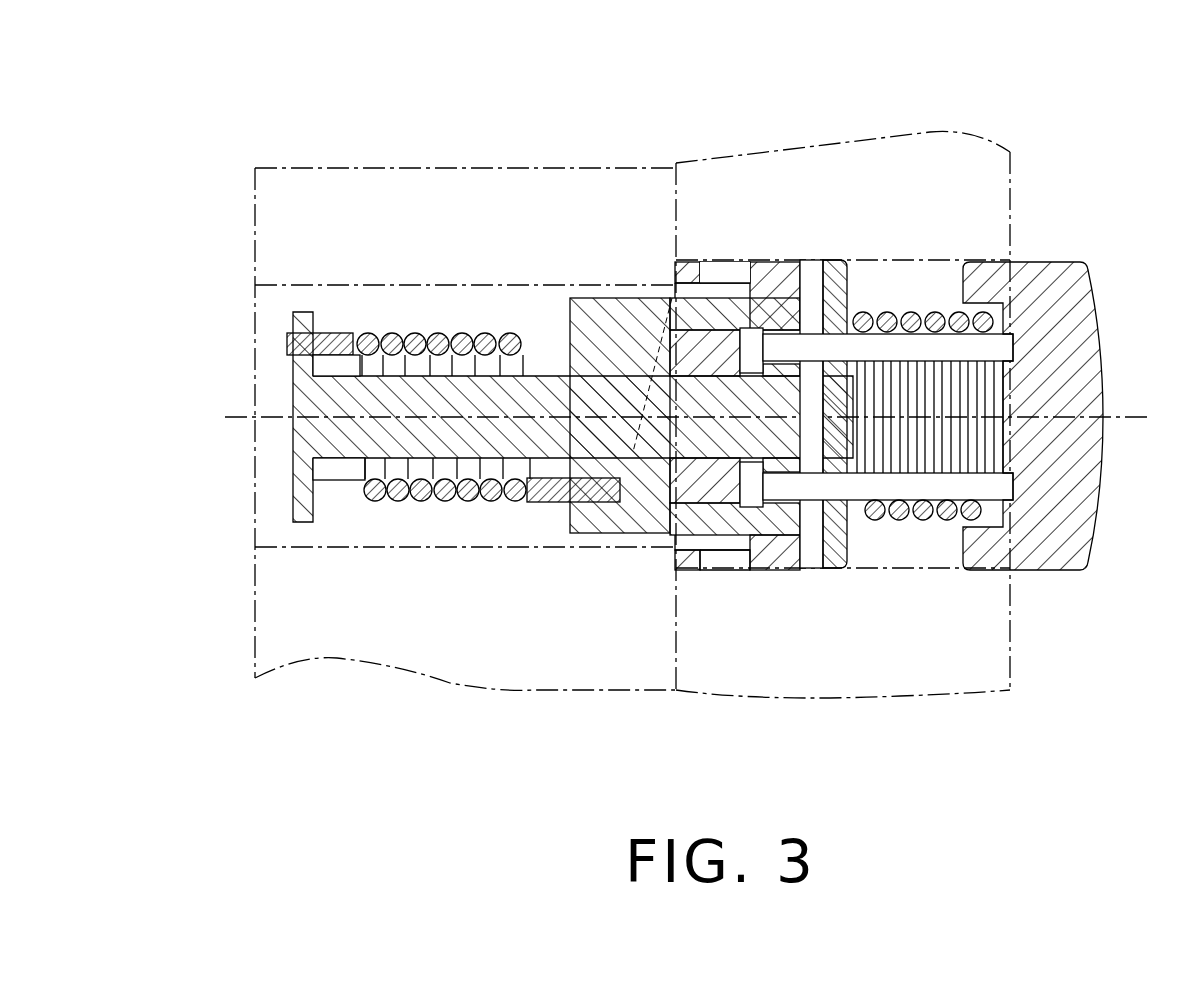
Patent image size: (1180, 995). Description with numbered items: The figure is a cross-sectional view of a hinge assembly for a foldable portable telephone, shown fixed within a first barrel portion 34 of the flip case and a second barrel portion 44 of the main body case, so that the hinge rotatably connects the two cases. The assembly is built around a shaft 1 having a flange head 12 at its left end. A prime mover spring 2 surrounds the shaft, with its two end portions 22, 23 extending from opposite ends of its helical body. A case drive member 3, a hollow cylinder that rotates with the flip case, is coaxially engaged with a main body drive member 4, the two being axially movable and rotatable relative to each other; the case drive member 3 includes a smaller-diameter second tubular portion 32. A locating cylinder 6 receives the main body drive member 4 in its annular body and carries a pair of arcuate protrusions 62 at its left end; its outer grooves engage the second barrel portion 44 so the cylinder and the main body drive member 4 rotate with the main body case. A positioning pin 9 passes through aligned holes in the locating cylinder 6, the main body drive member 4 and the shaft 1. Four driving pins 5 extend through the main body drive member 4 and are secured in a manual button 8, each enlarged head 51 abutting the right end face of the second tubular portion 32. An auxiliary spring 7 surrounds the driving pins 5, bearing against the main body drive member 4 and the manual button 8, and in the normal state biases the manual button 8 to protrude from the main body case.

The shaft 1 is at (333, 460).
The flange head 12 is at (293, 397).
The prime mover spring 2 is at (450, 330).
The end portion 22 is at (337, 333).
The end portion 23 is at (543, 500).
The case drive member 3 is at (633, 300).
The first barrel portion 34 is at (428, 190).
The main body drive member 4 is at (693, 313).
The second barrel portion 44 is at (920, 155).
The driving pin 5 is at (950, 345).
The enlarged head 51 is at (790, 570).
The locating cylinder 6 is at (783, 277).
The arcuate protrusion 62 is at (688, 570).
The auxiliary spring 7 is at (883, 312).
The manual button 8 is at (1070, 260).
The positioning pin 9 is at (818, 570).
The second tubular portion 32 is at (728, 572).